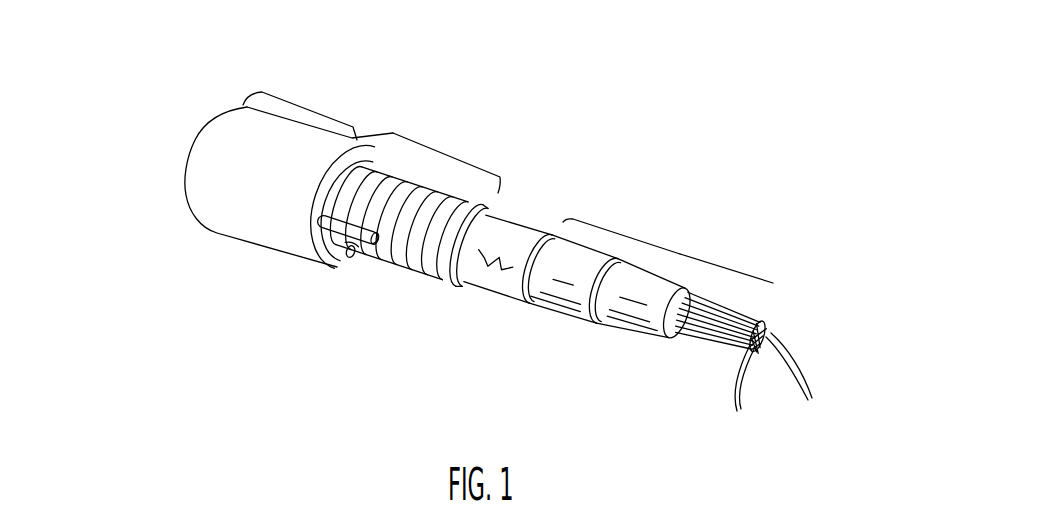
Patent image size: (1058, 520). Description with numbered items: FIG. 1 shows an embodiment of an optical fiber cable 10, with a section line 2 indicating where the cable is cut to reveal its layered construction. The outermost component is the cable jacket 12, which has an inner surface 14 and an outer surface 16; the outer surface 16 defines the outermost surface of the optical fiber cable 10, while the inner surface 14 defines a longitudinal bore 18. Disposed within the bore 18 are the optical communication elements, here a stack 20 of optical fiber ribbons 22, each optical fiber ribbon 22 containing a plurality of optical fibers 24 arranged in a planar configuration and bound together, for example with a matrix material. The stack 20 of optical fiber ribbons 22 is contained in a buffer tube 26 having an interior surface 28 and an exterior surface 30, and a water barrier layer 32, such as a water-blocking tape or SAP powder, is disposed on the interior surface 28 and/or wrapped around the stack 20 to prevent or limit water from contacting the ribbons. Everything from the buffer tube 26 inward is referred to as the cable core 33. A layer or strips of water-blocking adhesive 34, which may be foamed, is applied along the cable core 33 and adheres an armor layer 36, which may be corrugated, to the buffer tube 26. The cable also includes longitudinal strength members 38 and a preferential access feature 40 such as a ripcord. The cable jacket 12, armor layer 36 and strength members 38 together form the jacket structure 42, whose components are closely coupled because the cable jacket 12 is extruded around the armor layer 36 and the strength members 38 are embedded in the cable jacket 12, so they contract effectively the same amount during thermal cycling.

The section line 2- 2 is at (50, 192).
The optical fiber cable 10 is at (210, 92).
The cable jacket 12 is at (357, 138).
The inner surface 14 is at (425, 178).
The outer surface 16 is at (247, 228).
The longitudinal bore 18 is at (378, 273).
The stack 20 is at (766, 317).
The optical fiber ribbon 22 is at (806, 397).
The optical fiber 24 is at (738, 413).
The buffer tube 26 is at (577, 258).
The interior surface 28 is at (640, 266).
The exterior surface 30 is at (557, 312).
The water barrier layer 32 is at (643, 328).
The cable core 33 is at (693, 257).
The water-blocking adhesive 34 is at (507, 240).
The armor layer 36 is at (442, 288).
The longitudinal strength member 38 is at (340, 250).
The preferential access feature 40 is at (345, 258).
The jacket structure 42 is at (393, 133).